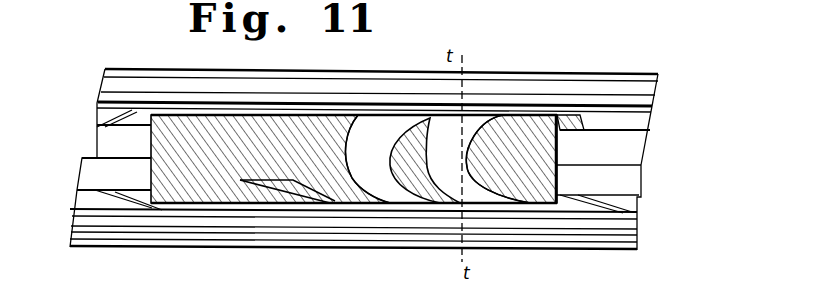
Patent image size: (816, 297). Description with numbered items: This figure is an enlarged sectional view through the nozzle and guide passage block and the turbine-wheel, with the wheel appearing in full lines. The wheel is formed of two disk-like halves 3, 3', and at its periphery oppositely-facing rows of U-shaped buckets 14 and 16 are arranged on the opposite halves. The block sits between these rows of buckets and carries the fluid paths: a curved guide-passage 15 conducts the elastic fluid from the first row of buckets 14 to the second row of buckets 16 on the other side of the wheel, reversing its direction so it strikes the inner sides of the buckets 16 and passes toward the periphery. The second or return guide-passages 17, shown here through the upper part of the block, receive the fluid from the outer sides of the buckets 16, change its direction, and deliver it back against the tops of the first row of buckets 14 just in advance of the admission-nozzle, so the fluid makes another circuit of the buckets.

The turbine-wheel half 3' is at (399, 118).
The second row of buckets 16 is at (622, 122).
The turbine-wheel half 3 is at (381, 204).
The first row of buckets 14 is at (627, 208).
The guide-passage 15 is at (322, 200).
The guide-passage 17 is at (437, 159).